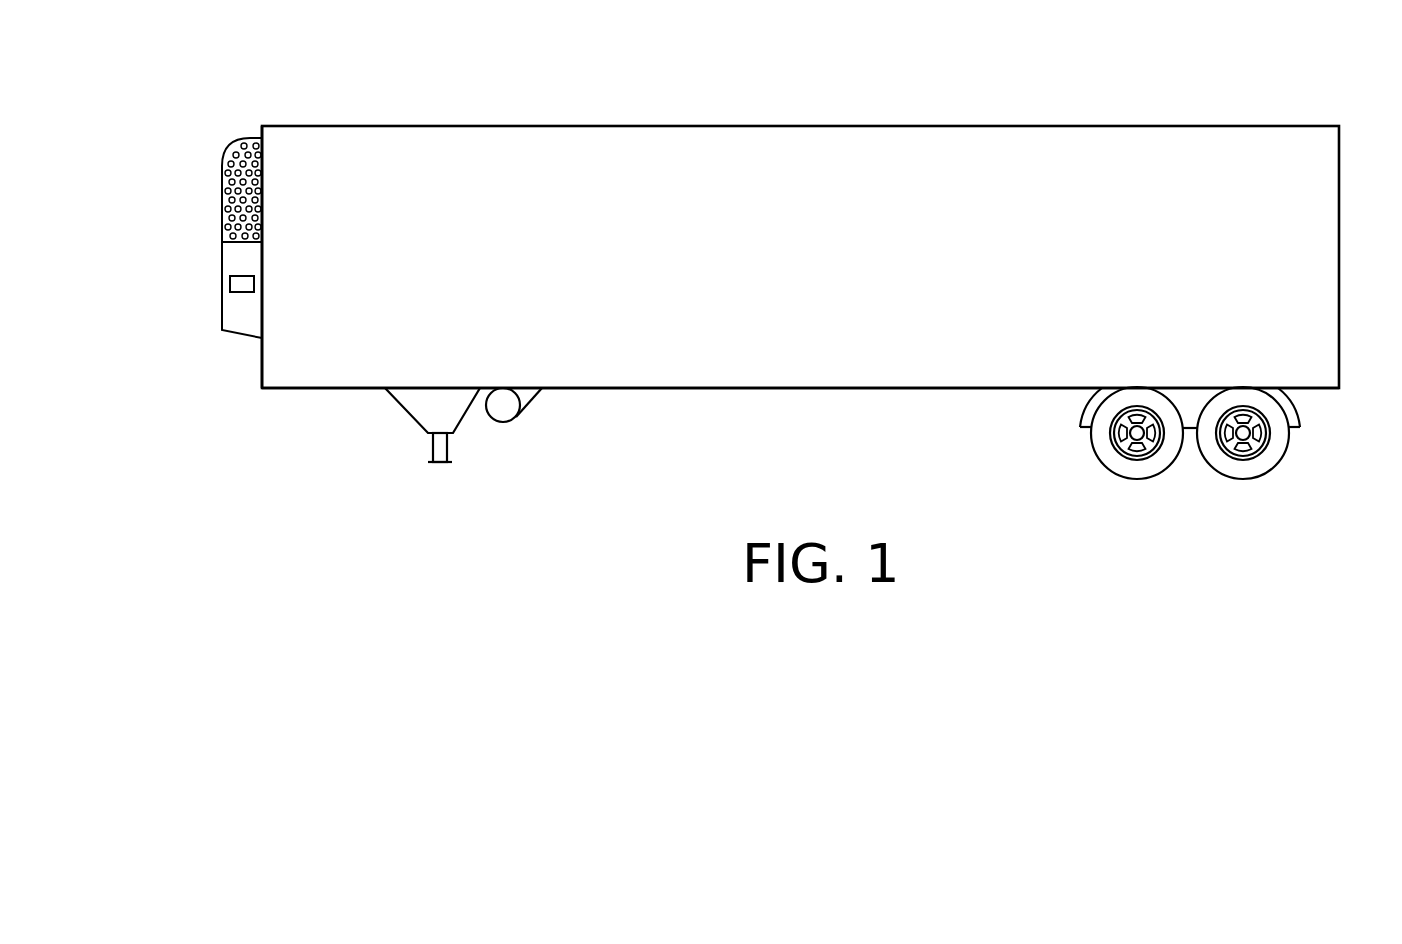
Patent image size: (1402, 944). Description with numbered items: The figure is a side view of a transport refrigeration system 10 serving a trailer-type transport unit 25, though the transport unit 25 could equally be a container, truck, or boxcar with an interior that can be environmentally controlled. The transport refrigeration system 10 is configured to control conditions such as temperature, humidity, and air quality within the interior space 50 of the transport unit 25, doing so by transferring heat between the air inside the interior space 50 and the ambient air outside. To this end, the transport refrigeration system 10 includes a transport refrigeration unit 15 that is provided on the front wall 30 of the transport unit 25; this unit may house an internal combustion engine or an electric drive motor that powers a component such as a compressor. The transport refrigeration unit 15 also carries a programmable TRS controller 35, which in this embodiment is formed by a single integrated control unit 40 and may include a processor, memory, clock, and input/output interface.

The transport refrigeration system 10 is at (519, 36).
The transport refrigeration unit 15 is at (236, 144).
The transport unit 25 is at (800, 125).
The front wall 30 is at (262, 373).
The TRS controller 35 is at (162, 302).
The single integrated control unit 40 is at (254, 284).
The interior space 50 is at (787, 373).